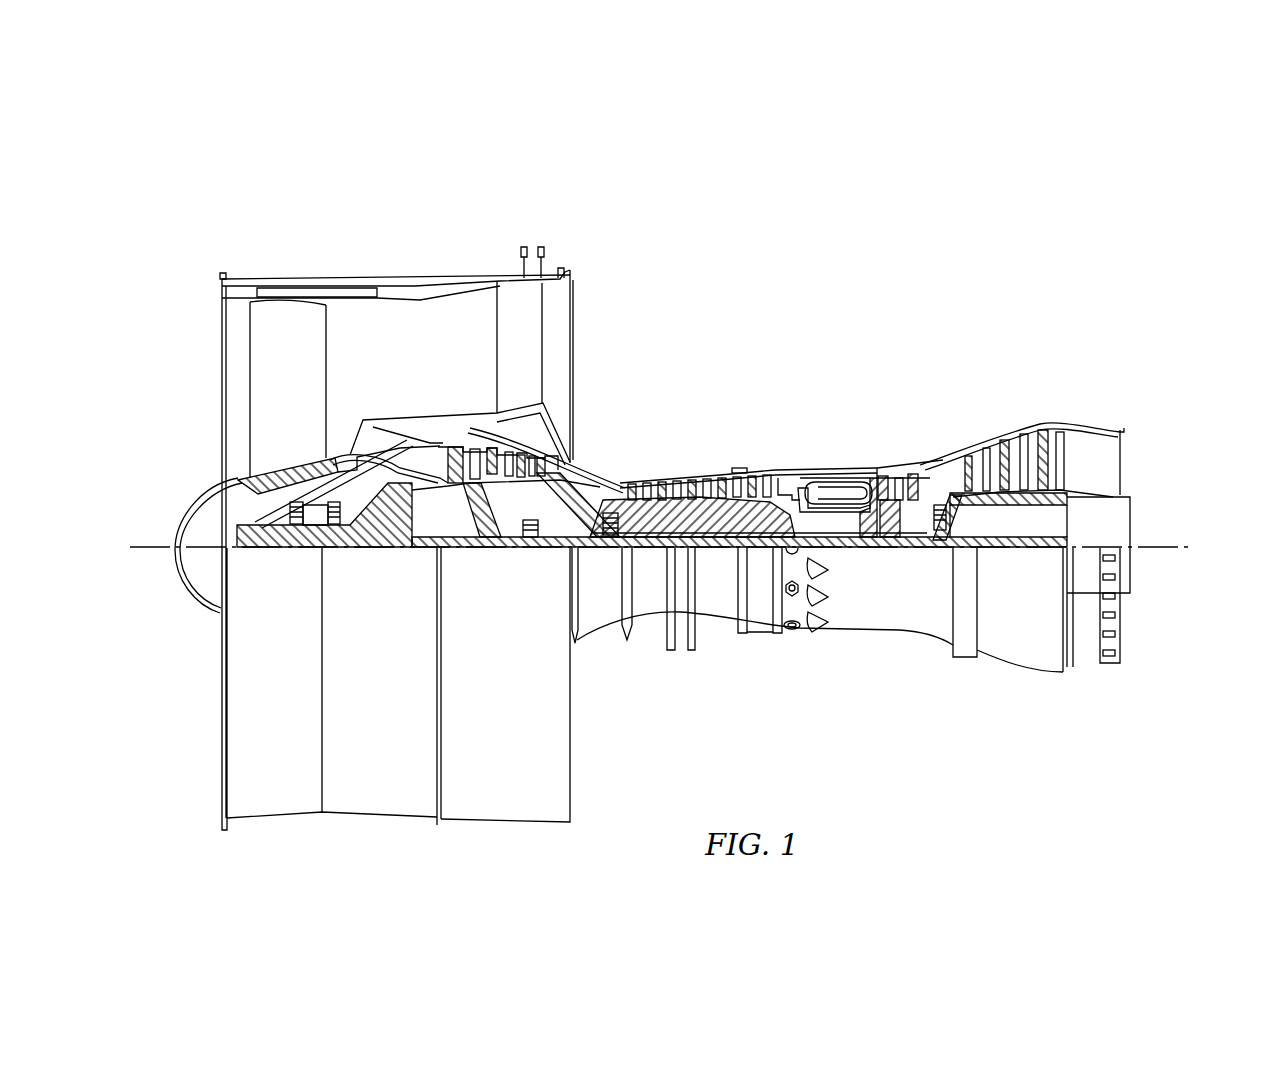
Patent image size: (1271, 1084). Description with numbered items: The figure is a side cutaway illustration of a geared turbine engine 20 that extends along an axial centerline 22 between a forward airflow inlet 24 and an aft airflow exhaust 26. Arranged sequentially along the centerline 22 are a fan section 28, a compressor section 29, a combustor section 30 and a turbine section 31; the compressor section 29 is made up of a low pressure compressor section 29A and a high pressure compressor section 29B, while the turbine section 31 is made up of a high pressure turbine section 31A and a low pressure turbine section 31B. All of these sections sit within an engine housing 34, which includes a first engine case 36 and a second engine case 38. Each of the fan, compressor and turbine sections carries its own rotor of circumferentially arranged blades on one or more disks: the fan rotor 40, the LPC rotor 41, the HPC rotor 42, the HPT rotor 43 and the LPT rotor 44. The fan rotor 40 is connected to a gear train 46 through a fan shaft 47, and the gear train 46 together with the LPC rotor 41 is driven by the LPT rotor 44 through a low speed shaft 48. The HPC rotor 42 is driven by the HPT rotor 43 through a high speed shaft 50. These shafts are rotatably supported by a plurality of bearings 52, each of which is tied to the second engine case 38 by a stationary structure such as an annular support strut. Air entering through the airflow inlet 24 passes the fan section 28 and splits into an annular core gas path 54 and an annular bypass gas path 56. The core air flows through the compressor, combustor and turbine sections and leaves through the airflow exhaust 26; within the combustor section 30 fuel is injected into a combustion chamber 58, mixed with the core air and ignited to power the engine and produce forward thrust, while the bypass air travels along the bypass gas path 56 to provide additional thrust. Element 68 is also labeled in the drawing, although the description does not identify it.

The geared turbine engine 20 is at (1000, 250).
The axial centerline 22 is at (1185, 547).
The forward airflow inlet 24 is at (222, 326).
The aft airflow exhaust 26 is at (1123, 458).
The fan section 28 is at (223, 260).
The compressor section 29 is at (428, 200).
The low pressure compressor (LPC) section 29A is at (570, 247).
The high pressure compressor (HPC) section 29B is at (757, 397).
The combustor section 30 is at (864, 397).
The turbine section 31 is at (868, 335).
The high pressure turbine (HPT) section 31A is at (868, 397).
The low pressure turbine (LPT) section 31B is at (1088, 397).
The engine housing 34 is at (582, 657).
The first engine case 36 is at (510, 822).
The second engine case 38 is at (762, 633).
The fan rotor 40 is at (226, 477).
The LPC rotor 41 is at (488, 525).
The HPC rotor 42 is at (712, 520).
The HPT rotor 43 is at (883, 530).
The LPT rotor 44 is at (1012, 503).
The gear train 46 is at (395, 548).
The fan shaft 47 is at (256, 550).
The low speed shaft 48 is at (1025, 548).
The high speed shaft 50 is at (832, 522).
The bearings 52 is at (308, 530).
The annular core gas path 54 is at (590, 478).
The annular bypass gas path 56 is at (416, 377).
The combustion chamber 58 is at (830, 495).
The fan exit guide vane 68 is at (572, 330).